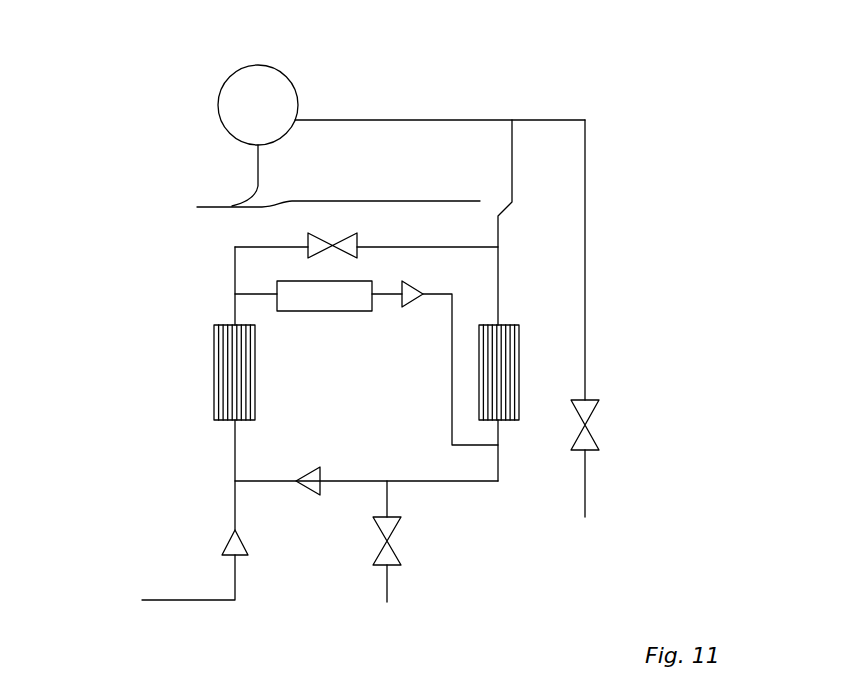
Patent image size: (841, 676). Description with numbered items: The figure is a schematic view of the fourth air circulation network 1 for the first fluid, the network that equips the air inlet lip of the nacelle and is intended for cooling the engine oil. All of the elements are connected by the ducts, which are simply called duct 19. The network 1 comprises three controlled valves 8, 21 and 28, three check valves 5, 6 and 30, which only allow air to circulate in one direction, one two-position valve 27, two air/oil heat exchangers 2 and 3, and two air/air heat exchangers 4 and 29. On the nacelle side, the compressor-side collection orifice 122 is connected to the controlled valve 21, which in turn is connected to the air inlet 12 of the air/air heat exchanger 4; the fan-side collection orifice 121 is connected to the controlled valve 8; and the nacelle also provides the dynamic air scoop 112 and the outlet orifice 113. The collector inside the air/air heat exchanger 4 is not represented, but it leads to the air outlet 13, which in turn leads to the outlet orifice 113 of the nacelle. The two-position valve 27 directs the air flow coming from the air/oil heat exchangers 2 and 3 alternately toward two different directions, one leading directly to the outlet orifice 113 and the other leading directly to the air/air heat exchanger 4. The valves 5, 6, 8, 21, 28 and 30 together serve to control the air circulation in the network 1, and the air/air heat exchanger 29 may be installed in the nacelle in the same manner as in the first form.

The air circulation network 1 is at (641, 81).
The air/oil heat exchanger 2 is at (210, 355).
The air/oil heat exchanger 3 is at (523, 349).
The air/air heat exchanger 4 is at (231, 70).
The check valve 5 is at (222, 538).
The check valve 6 is at (305, 495).
The controlled valve 8 is at (405, 540).
The air inlet 12 is at (298, 122).
The air outlet 13 is at (250, 144).
The duct 19 is at (378, 120).
The controlled valve 21 is at (603, 419).
The two-position valve 27 is at (505, 211).
The controlled valve 28 is at (333, 235).
The air/air heat exchanger 29 is at (321, 315).
The check valve 30 is at (414, 306).
The dynamic air scoop 112 is at (142, 600).
The outlet orifice 113 is at (171, 208).
The fan-side collection orifice 121 is at (387, 602).
The compressor-side collection orifice 122 is at (585, 517).